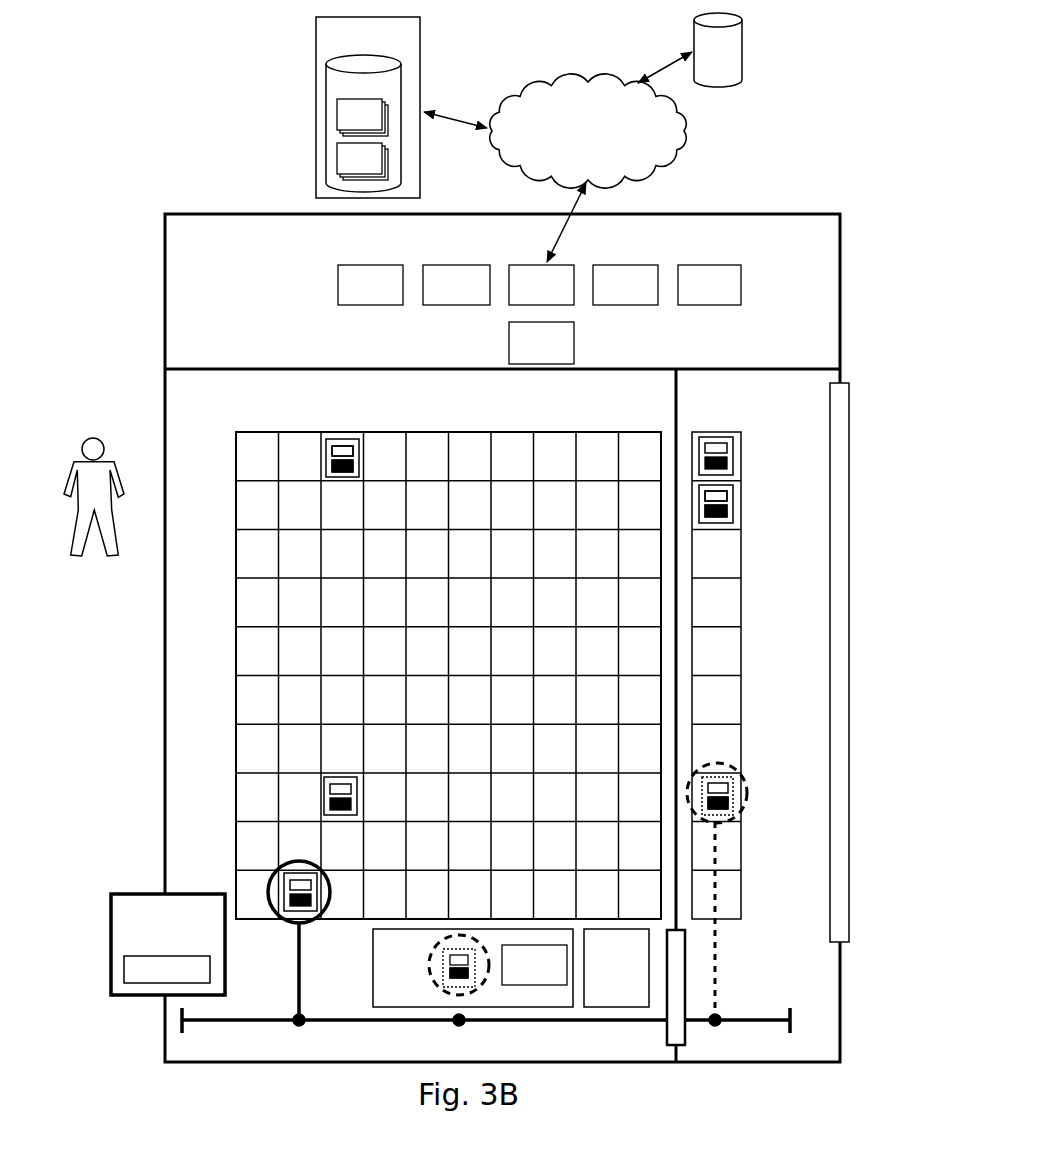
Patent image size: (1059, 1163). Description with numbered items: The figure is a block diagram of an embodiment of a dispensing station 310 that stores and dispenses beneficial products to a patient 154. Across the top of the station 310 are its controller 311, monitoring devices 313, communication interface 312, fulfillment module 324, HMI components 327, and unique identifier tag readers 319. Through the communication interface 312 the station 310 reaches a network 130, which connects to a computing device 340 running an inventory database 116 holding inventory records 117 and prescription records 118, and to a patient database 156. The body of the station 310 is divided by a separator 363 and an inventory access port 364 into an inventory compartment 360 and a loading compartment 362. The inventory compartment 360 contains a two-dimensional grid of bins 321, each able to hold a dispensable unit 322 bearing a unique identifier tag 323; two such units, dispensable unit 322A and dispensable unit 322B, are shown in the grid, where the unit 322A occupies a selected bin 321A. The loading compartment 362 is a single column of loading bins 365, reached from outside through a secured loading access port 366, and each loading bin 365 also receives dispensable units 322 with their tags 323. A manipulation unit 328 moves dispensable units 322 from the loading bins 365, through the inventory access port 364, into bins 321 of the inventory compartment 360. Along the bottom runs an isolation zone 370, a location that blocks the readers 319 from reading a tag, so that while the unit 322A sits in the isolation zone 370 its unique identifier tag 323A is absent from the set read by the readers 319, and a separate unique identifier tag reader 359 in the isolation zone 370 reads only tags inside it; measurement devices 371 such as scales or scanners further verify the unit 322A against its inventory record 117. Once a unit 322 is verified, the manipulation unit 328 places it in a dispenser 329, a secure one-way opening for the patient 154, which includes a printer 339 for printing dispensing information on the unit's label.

The computing device 340 is at (382, 43).
The inventory database 116 is at (379, 93).
The inventory records 117 is at (374, 123).
The prescription record 118 is at (374, 167).
The network 130 is at (604, 156).
The patient database 156 is at (733, 65).
The dispensing station 310 is at (417, 253).
The controller 311 is at (385, 294).
The monitoring devices 313 is at (471, 294).
The communication interface 312 is at (556, 294).
The fulfillment module 324 is at (640, 294).
The HMI components 327 is at (724, 294).
The unique identifier tag readers 319 is at (556, 353).
The inventory compartment 360 is at (220, 410).
The bins 321 is at (423, 436).
The dispensable unit 322 is at (334, 441).
The unique identifier tag 323 is at (327, 466).
The dispensable unit 322A is at (285, 886).
The dispensable unit 322B is at (324, 790).
The unique identifier tag 323A is at (732, 803).
The manipulation unit 328 is at (314, 920).
The selected bin 321A is at (288, 922).
The loading compartment 362 is at (722, 401).
The separator 363 is at (678, 369).
The loading bins 365 is at (733, 437).
The loading access port 366 is at (840, 405).
The inventory access port 364 is at (683, 957).
The unique identifier tag reader 359 is at (549, 974).
The measurement devices 371 is at (631, 974).
The isolation zone 370 is at (436, 1008).
The dispenser 329 is at (153, 948).
The printer 339 is at (152, 980).
The patient 154 is at (110, 556).